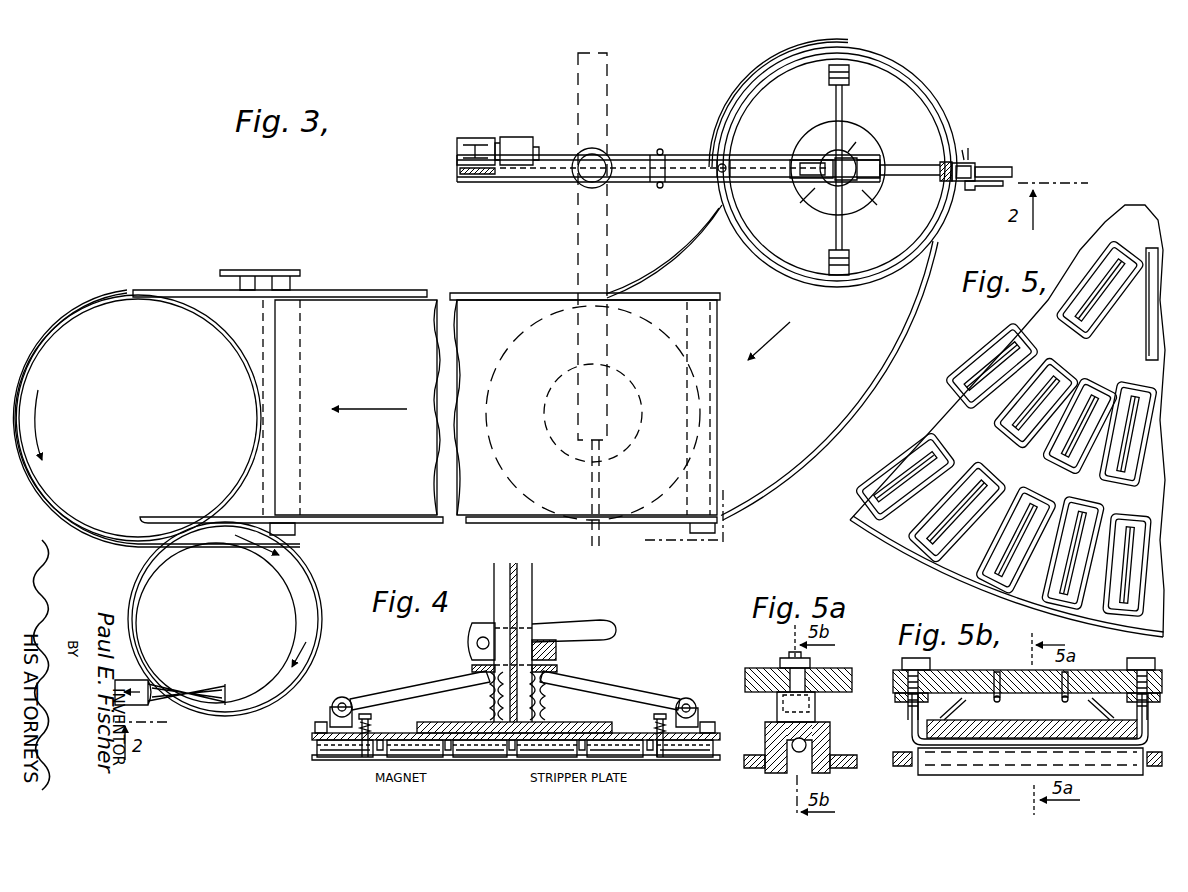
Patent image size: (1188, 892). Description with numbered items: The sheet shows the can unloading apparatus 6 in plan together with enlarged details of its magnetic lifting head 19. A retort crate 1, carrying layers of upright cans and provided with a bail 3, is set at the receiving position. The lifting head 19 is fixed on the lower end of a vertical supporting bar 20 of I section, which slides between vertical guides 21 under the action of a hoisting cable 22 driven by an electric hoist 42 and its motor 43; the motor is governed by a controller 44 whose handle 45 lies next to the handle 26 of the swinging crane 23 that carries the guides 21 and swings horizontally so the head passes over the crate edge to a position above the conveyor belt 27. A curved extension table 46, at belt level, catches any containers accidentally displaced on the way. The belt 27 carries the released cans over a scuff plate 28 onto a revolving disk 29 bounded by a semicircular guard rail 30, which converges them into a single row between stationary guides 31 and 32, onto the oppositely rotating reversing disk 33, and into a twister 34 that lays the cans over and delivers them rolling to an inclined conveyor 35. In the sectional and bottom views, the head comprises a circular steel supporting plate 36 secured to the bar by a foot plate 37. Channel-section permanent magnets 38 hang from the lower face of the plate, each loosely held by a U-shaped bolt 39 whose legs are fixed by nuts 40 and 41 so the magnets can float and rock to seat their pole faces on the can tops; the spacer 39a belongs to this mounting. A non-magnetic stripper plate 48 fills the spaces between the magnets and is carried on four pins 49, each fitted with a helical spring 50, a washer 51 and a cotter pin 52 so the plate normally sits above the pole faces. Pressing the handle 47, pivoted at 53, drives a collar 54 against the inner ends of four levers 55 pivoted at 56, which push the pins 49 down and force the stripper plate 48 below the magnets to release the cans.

In FIG. 3, the retort crate 1 is at (948, 205).
In FIG. 3, the bail 3 is at (911, 74).
In FIG. 3, the unloading apparatus 6 is at (540, 250).
In FIG. 3, the lifting head 19 is at (520, 478).
In FIG. 5, the lifting head 19 is at (850, 515).
In FIG. 3, the vertical supporting bar 20 is at (862, 197).
In FIG. 3, the vertical guides 21 is at (864, 140).
In FIG. 3, the hoisting cable 22 is at (703, 183).
In FIG. 3, the swinging crane 23 is at (688, 155).
In FIG. 3, the handle 26 is at (1013, 170).
In FIG. 3, the conveyor belt 27 is at (494, 300).
In FIG. 3, the scuff plate 28 is at (210, 298).
In FIG. 3, the revolving disk 29 is at (72, 322).
In FIG. 3, the guard rail 30 is at (156, 418).
In FIG. 3, the stationary guide 31 is at (198, 546).
In FIG. 3, the stationary guide 32 is at (182, 517).
In FIG. 3, the reversing disk 33 is at (146, 581).
In FIG. 3, the twister 34 is at (198, 702).
In FIG. 3, the inclined conveyor 35 is at (128, 680).
In FIG. 5, the supporting plate 36 is at (883, 527).
In FIG. 4, the supporting plate 36 is at (312, 736).
In FIG. 5A, the supporting plate 36 is at (748, 678).
In FIG. 5B, the supporting plate 36 is at (896, 682).
In FIG. 4, the foot plate 37 is at (457, 724).
In FIG. 5, the permanent magnets 38 is at (932, 486).
In FIG. 4, the permanent magnets 38 is at (356, 758).
In FIG. 5A, the permanent magnets 38 is at (768, 770).
In FIG. 5B, the permanent magnets 38 is at (990, 760).
In FIG. 5, the U-shaped bolt 39 is at (940, 460).
In FIG. 4, the U-shaped bolt 39 is at (470, 758).
In FIG. 5A, the U-shaped bolt 39 is at (808, 742).
In FIG. 5B, the U-shaped bolt 39 is at (960, 740).
In FIG. 4, the spacer 39a is at (317, 746).
In FIG. 5A, the spacer 39a is at (816, 706).
In FIG. 5B, the spacer 39a is at (1085, 700).
In FIG. 5B, the nut 40 is at (930, 666).
In FIG. 5B, the nut 41 is at (914, 712).
In FIG. 3, the electric hoist 42 is at (478, 133).
In FIG. 3, the motor 43 is at (517, 135).
In FIG. 3, the controller 44 is at (976, 165).
In FIG. 3, the handle 45 is at (980, 190).
In FIG. 3, the curved extension table 46 is at (896, 352).
In FIG. 3, the handle 47 is at (895, 165).
In FIG. 4, the handle 47 is at (600, 621).
In FIG. 5, the stripper plate 48 is at (1064, 278).
In FIG. 4, the stripper plate 48 is at (514, 760).
In FIG. 5A, the stripper plate 48 is at (852, 765).
In FIG. 5B, the stripper plate 48 is at (1157, 768).
In FIG. 3, the pins 49 is at (836, 97).
In FIG. 4, the pins 49 is at (426, 723).
In FIG. 4, the helical spring 50 is at (378, 722).
In FIG. 4, the washer 51 is at (373, 712).
In FIG. 4, the cotter pin 52 is at (365, 714).
In FIG. 4, the pivot 53 is at (478, 640).
In FIG. 3, the collar 54 is at (846, 160).
In FIG. 4, the collar 54 is at (560, 660).
In FIG. 3, the levers 55 is at (815, 126).
In FIG. 4, the levers 55 is at (453, 678).
In FIG. 4, the pivot 56 is at (331, 700).